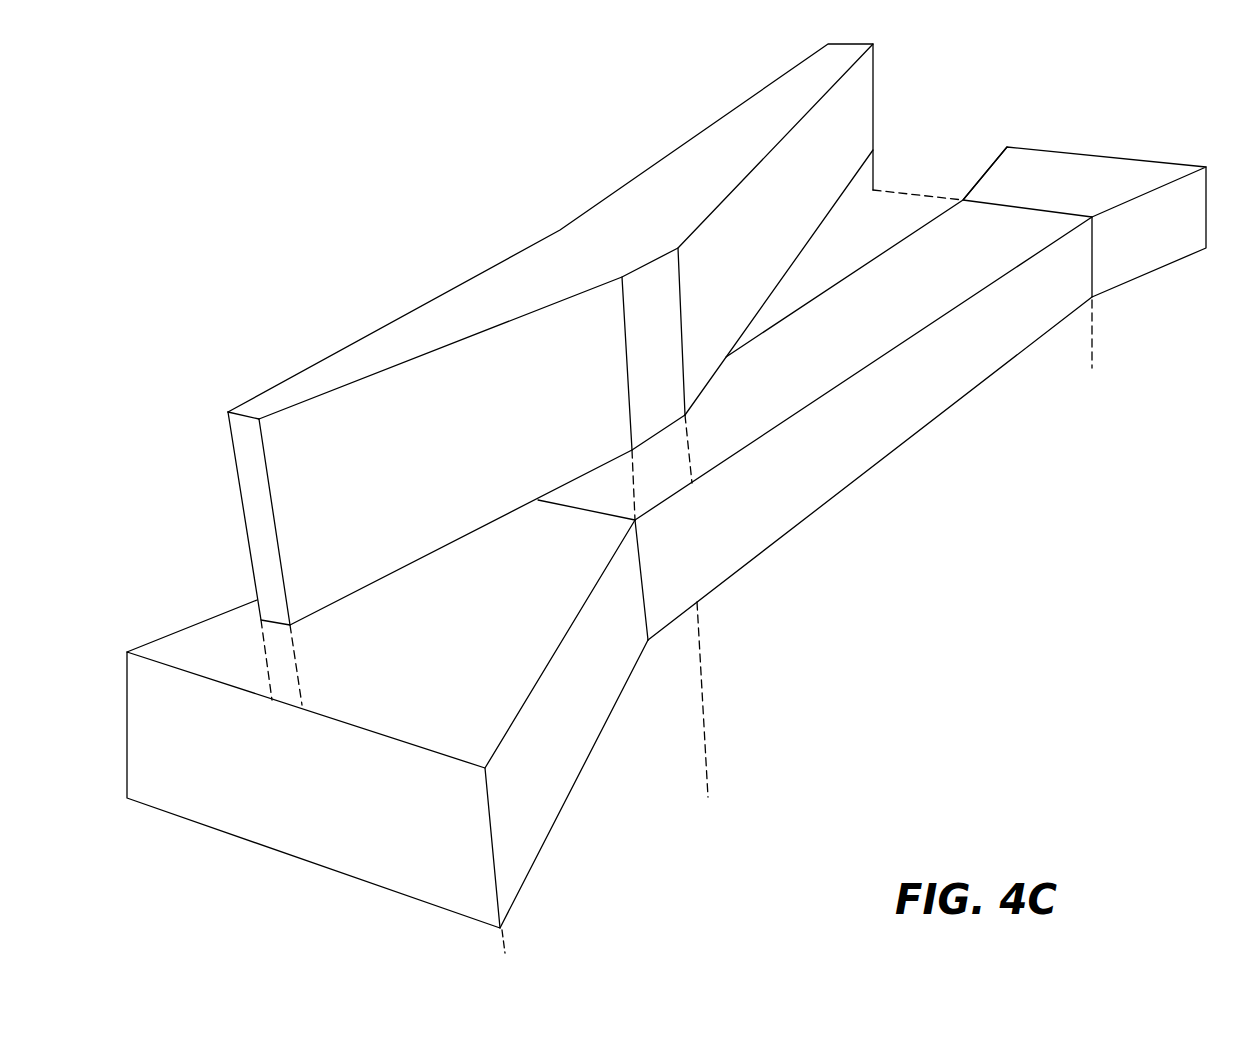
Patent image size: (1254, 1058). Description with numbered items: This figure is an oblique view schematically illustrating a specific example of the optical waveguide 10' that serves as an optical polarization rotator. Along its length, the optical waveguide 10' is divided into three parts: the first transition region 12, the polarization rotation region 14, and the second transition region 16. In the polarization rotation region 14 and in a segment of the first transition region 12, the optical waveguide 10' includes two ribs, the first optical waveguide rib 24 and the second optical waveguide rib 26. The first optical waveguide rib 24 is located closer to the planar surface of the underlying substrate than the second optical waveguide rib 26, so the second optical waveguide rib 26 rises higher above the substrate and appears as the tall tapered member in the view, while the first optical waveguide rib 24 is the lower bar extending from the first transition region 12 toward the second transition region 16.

The optical waveguide 10' is at (1039, 675).
The first transition region 12 is at (508, 936).
The polarization rotation region 14 is at (708, 630).
The second transition region 16 is at (1031, 207).
The first optical waveguide rib 24 is at (860, 453).
The second optical waveguide rib 26 is at (772, 243).